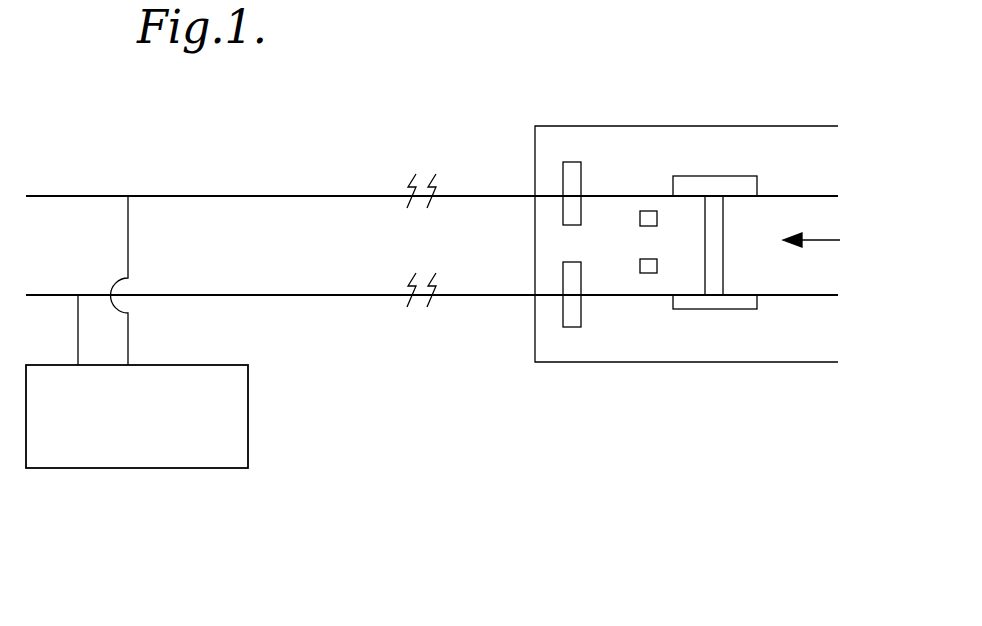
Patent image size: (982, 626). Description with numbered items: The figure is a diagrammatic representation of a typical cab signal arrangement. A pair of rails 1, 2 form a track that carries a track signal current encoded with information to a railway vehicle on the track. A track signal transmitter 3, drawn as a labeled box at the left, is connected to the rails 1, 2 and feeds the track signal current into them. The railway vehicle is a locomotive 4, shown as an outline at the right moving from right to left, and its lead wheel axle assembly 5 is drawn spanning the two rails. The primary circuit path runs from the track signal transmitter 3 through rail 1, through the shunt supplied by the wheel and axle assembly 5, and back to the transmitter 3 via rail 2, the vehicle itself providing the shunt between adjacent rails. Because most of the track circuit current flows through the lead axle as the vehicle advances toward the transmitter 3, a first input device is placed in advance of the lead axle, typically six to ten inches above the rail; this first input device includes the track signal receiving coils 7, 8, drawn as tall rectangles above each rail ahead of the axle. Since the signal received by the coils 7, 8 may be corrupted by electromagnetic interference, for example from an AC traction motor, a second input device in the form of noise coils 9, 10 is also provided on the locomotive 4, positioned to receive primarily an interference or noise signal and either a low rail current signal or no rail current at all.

The rail 1 is at (342, 295).
The rail 2 is at (285, 196).
The track signal transmitter 3 is at (248, 418).
The locomotive 4 is at (785, 126).
The lead wheel axle assembly 5 is at (720, 309).
The track signal receiving coil 7 is at (572, 327).
The track signal receiving coil 8 is at (572, 162).
The noise coil 9 is at (648, 273).
The noise coil 10 is at (648, 211).